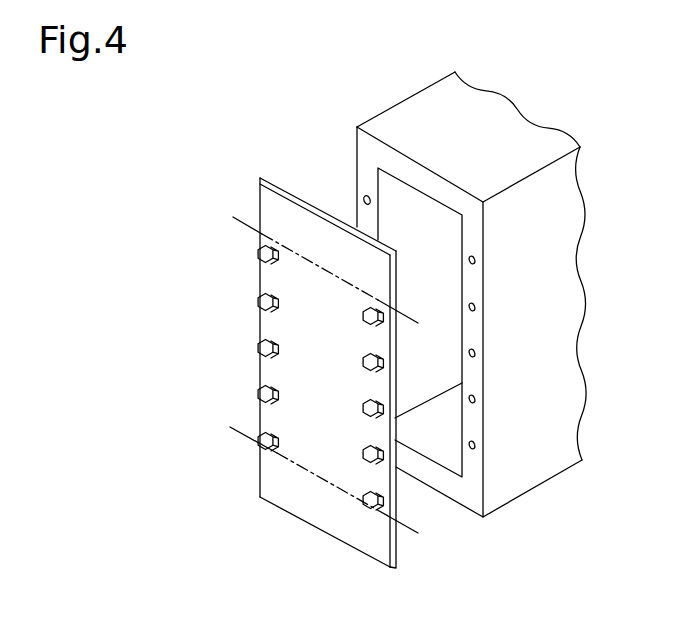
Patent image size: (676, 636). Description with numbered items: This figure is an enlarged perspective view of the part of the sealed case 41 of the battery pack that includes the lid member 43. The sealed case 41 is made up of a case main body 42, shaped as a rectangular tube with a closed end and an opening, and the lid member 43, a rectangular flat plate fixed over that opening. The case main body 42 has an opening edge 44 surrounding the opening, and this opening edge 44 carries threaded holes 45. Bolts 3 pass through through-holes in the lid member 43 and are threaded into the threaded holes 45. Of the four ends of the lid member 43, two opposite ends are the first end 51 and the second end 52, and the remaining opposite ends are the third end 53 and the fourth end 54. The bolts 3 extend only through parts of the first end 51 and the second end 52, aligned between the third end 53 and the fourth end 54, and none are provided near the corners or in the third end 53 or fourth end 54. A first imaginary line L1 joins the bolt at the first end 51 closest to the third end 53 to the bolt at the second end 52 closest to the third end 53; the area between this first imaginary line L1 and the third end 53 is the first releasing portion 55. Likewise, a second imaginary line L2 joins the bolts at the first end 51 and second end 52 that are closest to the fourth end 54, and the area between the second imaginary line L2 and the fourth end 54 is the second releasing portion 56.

The bolt 3 is at (258, 302).
The sealed case 41 is at (453, 321).
The case main body 42 is at (505, 507).
The lid member 43 is at (397, 570).
The opening edge 44 is at (362, 145).
The threaded holes 45 is at (477, 263).
The first end 51 is at (327, 356).
The second end 52 is at (385, 385).
The third end 53 is at (277, 197).
The fourth end 54 is at (313, 515).
The first releasing portion 55 is at (378, 276).
The second releasing portion 56 is at (264, 470).
The first imaginary line L1 is at (302, 257).
The second imaginary line L2 is at (292, 467).